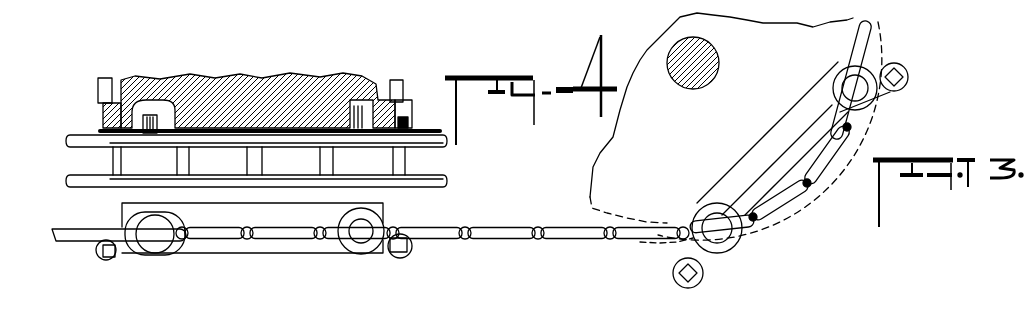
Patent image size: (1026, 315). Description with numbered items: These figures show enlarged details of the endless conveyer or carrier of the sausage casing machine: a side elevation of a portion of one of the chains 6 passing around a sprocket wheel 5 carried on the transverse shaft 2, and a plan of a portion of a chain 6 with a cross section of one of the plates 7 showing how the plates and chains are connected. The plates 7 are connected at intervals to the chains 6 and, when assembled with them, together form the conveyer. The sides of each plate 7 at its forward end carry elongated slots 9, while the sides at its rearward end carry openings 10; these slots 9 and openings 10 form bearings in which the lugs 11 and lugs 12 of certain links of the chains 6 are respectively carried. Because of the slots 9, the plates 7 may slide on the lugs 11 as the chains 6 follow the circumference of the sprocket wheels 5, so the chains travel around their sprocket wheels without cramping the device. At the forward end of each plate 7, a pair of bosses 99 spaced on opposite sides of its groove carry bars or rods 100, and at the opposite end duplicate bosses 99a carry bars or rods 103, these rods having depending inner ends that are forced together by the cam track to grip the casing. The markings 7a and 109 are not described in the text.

In FIG. 13, the transverse shaft 2 is at (718, 74).
In FIG. 13, the sprocket wheel 5 is at (721, 118).
In FIG. 13, the sprocket chain 6 is at (827, 157).
In FIG. 14, the plate 7 is at (270, 78).
In FIG. 13, the plate 7 is at (762, 163).
In FIG. 13, the link plate portion 7a is at (737, 307).
In FIG. 14, the elongated slot 9 is at (191, 77).
In FIG. 13, the elongated slot 9 is at (693, 220).
In FIG. 14, the opening 10 is at (408, 115).
In FIG. 14, the lug 11 is at (143, 120).
In FIG. 13, the lug 11 is at (735, 243).
In FIG. 14, the lug 12 is at (353, 108).
In FIG. 13, the lug 12 is at (845, 80).
In FIG. 14, the boss 99 is at (96, 113).
In FIG. 13, the boss 99 is at (676, 270).
In FIG. 14, the boss 99a is at (405, 114).
In FIG. 13, the boss 99a is at (909, 80).
In FIG. 14, the bar or rod 100 is at (111, 78).
In FIG. 13, the bar or rod 100 is at (700, 268).
In FIG. 14, the bar or rod 103 is at (403, 80).
In FIG. 13, the bar or rod 103 is at (912, 58).
In FIG. 14, the chain 109 is at (369, 302).